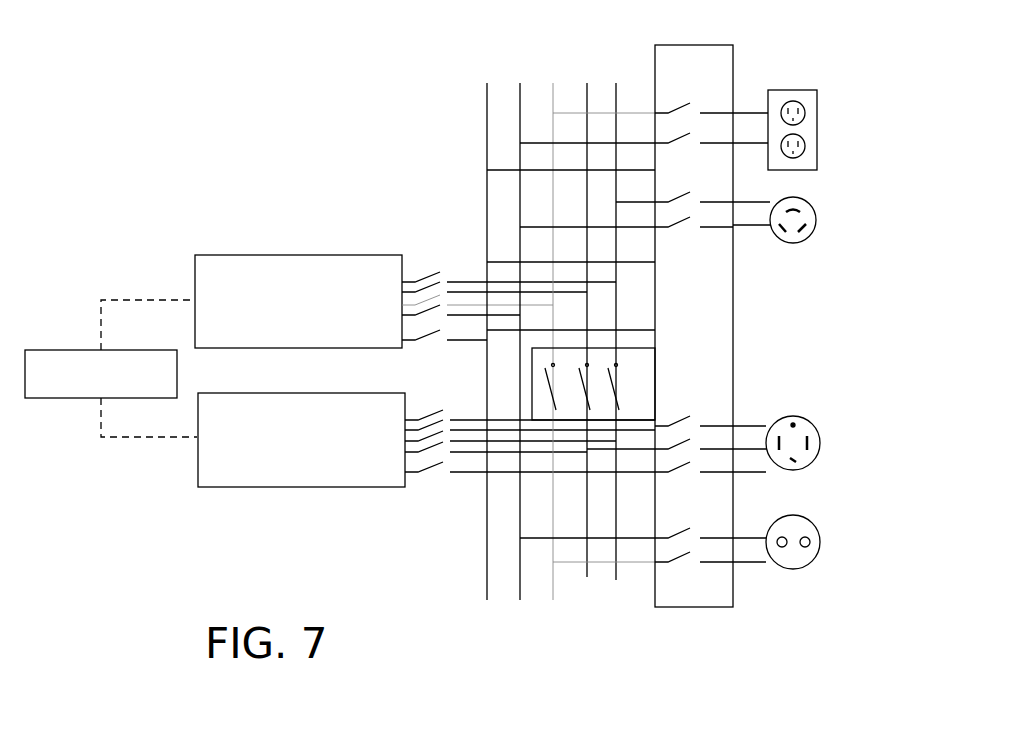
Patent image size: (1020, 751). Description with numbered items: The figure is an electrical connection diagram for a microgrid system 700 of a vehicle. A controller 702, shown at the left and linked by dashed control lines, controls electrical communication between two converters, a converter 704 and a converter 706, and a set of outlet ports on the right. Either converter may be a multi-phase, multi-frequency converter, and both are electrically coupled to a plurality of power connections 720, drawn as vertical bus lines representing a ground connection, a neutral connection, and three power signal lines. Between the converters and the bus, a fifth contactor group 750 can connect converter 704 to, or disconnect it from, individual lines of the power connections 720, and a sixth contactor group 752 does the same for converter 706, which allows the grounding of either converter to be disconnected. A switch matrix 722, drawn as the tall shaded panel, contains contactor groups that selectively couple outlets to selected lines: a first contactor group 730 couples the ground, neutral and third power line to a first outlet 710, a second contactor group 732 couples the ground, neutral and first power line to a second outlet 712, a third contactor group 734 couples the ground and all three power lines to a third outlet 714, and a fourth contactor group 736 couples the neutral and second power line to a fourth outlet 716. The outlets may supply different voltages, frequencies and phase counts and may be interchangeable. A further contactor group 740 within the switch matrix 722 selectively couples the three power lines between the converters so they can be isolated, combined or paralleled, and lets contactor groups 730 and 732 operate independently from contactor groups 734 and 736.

The microgrid system 700 is at (198, 190).
The controller 702 is at (52, 350).
The converter 704 is at (300, 255).
The converter 706 is at (300, 488).
The first outlet 710 is at (818, 130).
The second outlet 712 is at (817, 220).
The third outlet 714 is at (820, 443).
The fourth outlet 716 is at (820, 542).
The power connections 720 is at (638, 52).
The switch matrix 722 is at (655, 600).
The first contactor group 730 is at (712, 93).
The second contactor group 732 is at (713, 250).
The third contactor group 734 is at (713, 398).
The fourth contactor group 736 is at (705, 584).
The contactor group 740 is at (643, 348).
The fifth contactor group 750 is at (440, 250).
The sixth contactor group 752 is at (438, 492).